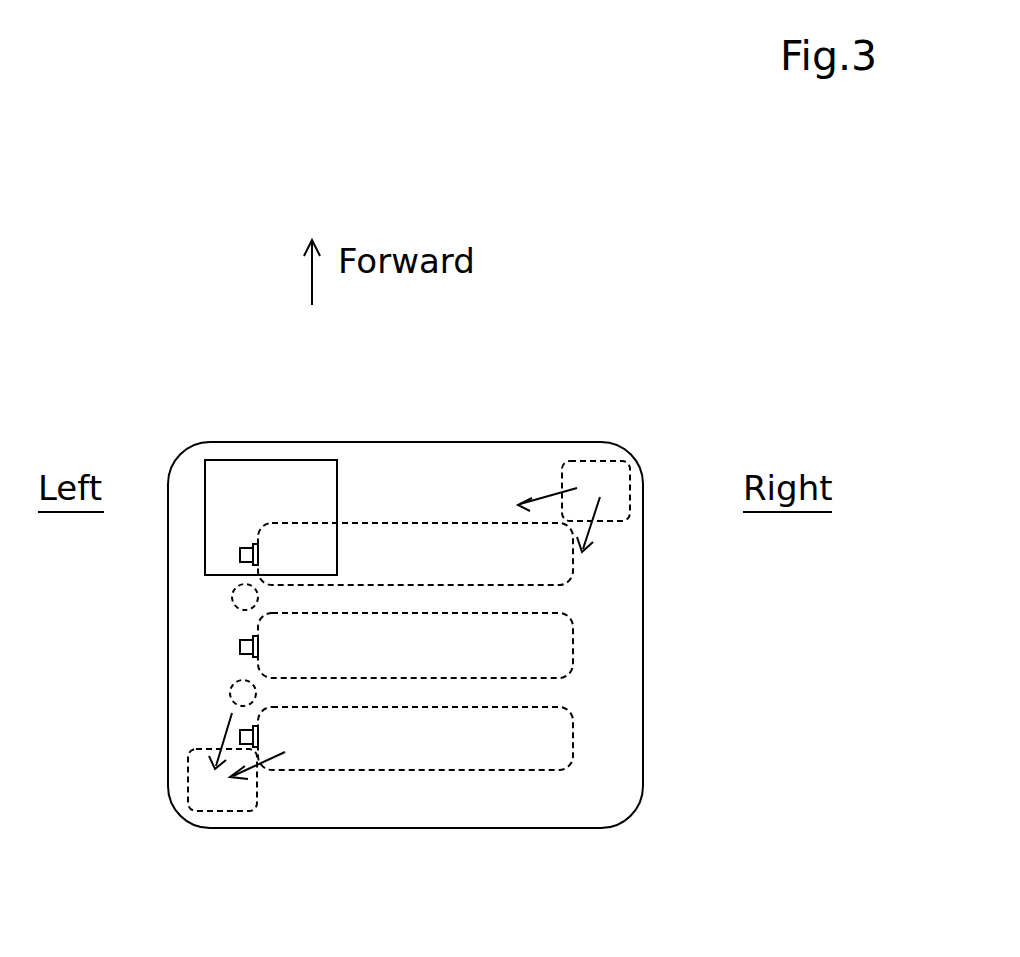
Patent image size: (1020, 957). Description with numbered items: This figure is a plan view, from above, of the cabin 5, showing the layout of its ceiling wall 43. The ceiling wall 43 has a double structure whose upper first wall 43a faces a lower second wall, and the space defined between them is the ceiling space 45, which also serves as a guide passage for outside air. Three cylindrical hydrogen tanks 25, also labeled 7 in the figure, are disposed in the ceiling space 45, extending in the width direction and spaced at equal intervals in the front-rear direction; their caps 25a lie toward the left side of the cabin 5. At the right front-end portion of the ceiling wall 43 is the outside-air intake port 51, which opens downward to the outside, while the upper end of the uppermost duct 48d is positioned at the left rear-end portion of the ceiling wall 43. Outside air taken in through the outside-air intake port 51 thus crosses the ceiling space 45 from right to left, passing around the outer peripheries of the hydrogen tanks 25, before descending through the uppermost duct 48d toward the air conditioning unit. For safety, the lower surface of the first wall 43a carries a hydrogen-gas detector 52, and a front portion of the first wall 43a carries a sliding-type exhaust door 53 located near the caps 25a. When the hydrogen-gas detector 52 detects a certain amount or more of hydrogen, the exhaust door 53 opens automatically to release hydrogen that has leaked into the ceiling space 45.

The cabin 5 is at (421, 559).
The battery cell 7 is at (508, 646).
The hydrogen tank 25 is at (530, 747).
The cap 25a is at (240, 555).
The ceiling wall 43 is at (405, 587).
The first wall 43a is at (423, 472).
The ceiling space (guide passage) 45 is at (437, 793).
The uppermost duct 48d is at (215, 790).
The outside-air intake port 51 is at (618, 497).
The hydrogen-gas detector 52 is at (233, 603).
The exhaust door 53 is at (228, 472).